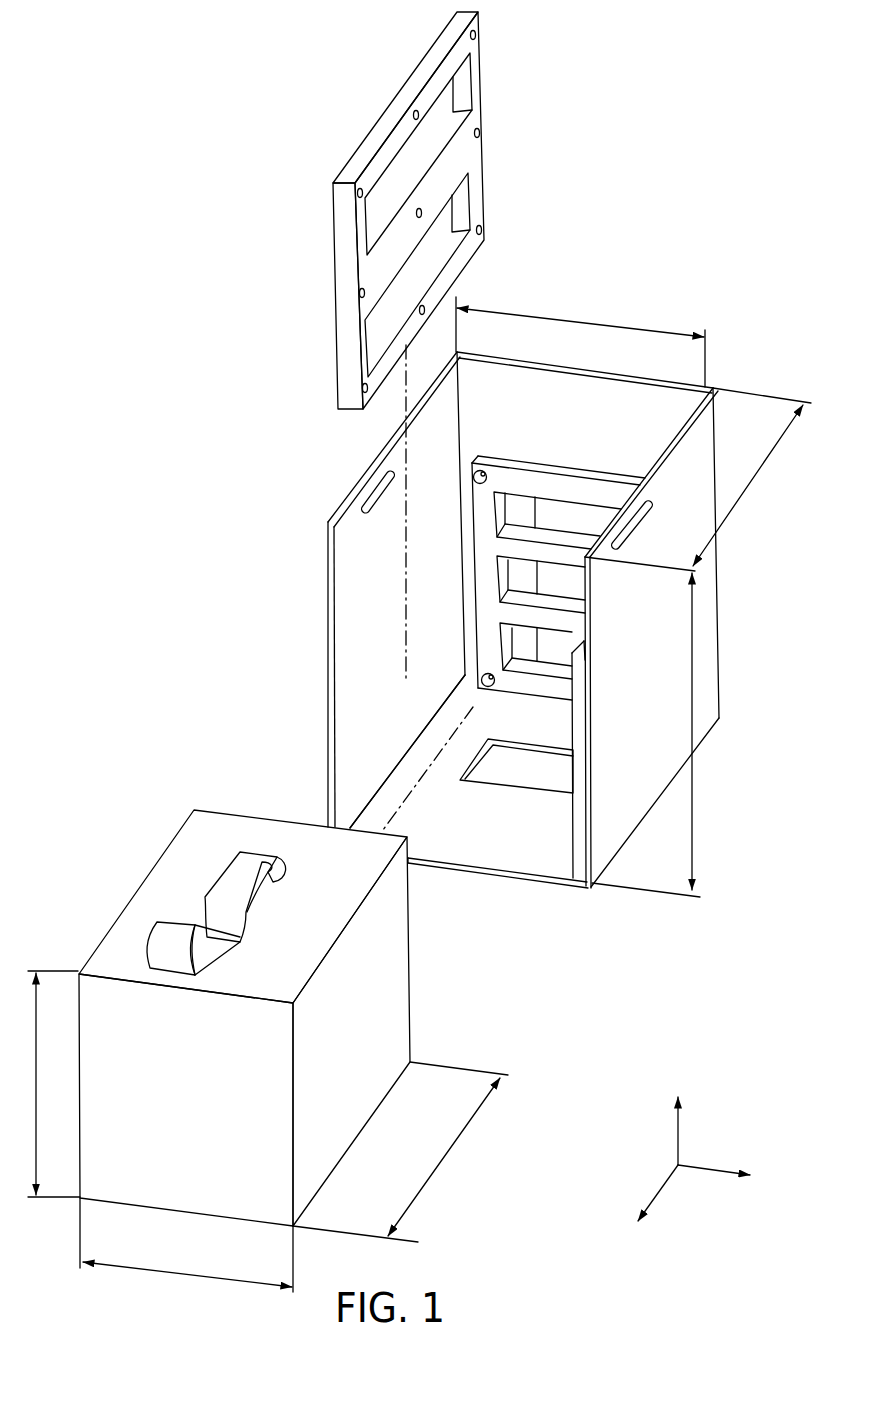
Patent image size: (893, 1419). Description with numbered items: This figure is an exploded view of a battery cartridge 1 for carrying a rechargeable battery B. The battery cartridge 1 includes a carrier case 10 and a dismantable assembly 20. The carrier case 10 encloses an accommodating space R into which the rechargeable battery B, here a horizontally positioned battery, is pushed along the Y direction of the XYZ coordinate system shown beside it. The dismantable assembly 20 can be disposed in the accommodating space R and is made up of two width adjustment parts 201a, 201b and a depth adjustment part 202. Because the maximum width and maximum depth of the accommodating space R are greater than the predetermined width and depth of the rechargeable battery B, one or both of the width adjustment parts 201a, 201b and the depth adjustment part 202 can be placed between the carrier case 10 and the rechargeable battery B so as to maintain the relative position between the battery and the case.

The battery cartridge 1 is at (138, 134).
The carrier case 10 is at (705, 666).
The dismantable assembly 20 is at (363, 484).
The width adjustment part 201a is at (476, 154).
The width adjustment part 201b is at (578, 860).
The depth adjustment part 202 is at (565, 470).
The accommodating space R is at (442, 685).
The rechargeable battery B is at (390, 1073).